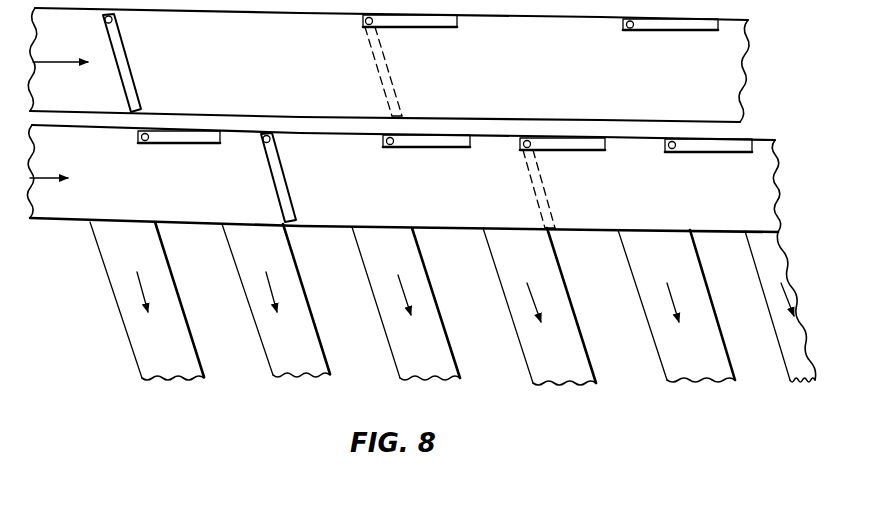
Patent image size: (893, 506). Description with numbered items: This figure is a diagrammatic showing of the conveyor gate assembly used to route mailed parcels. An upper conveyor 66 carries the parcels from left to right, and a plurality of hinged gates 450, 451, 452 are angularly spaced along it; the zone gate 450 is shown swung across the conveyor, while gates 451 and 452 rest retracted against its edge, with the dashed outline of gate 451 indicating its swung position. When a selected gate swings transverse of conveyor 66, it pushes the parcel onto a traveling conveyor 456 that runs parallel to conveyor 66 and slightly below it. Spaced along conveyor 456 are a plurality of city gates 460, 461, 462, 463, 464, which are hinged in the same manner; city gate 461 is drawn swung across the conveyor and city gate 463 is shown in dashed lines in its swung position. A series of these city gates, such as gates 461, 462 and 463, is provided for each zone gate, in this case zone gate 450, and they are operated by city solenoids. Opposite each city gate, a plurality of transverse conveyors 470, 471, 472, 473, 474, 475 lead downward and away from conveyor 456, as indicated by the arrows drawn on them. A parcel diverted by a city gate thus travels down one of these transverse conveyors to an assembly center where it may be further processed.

The conveyor 66 is at (290, 72).
The traveling conveyor 456 is at (110, 190).
The zone gate 450 is at (131, 72).
The gate 451 is at (423, 28).
The gate 452 is at (673, 30).
The city gate 460 is at (193, 135).
The city gate 461 is at (289, 184).
The city gate 462 is at (442, 141).
The city gate 463 is at (575, 150).
The city gate 464 is at (715, 144).
The transverse conveyor 470 is at (134, 346).
The transverse conveyor 471 is at (268, 345).
The transverse conveyor 472 is at (400, 349).
The transverse conveyor 473 is at (532, 351).
The transverse conveyor 474 is at (672, 353).
The transverse conveyor 475 is at (798, 355).